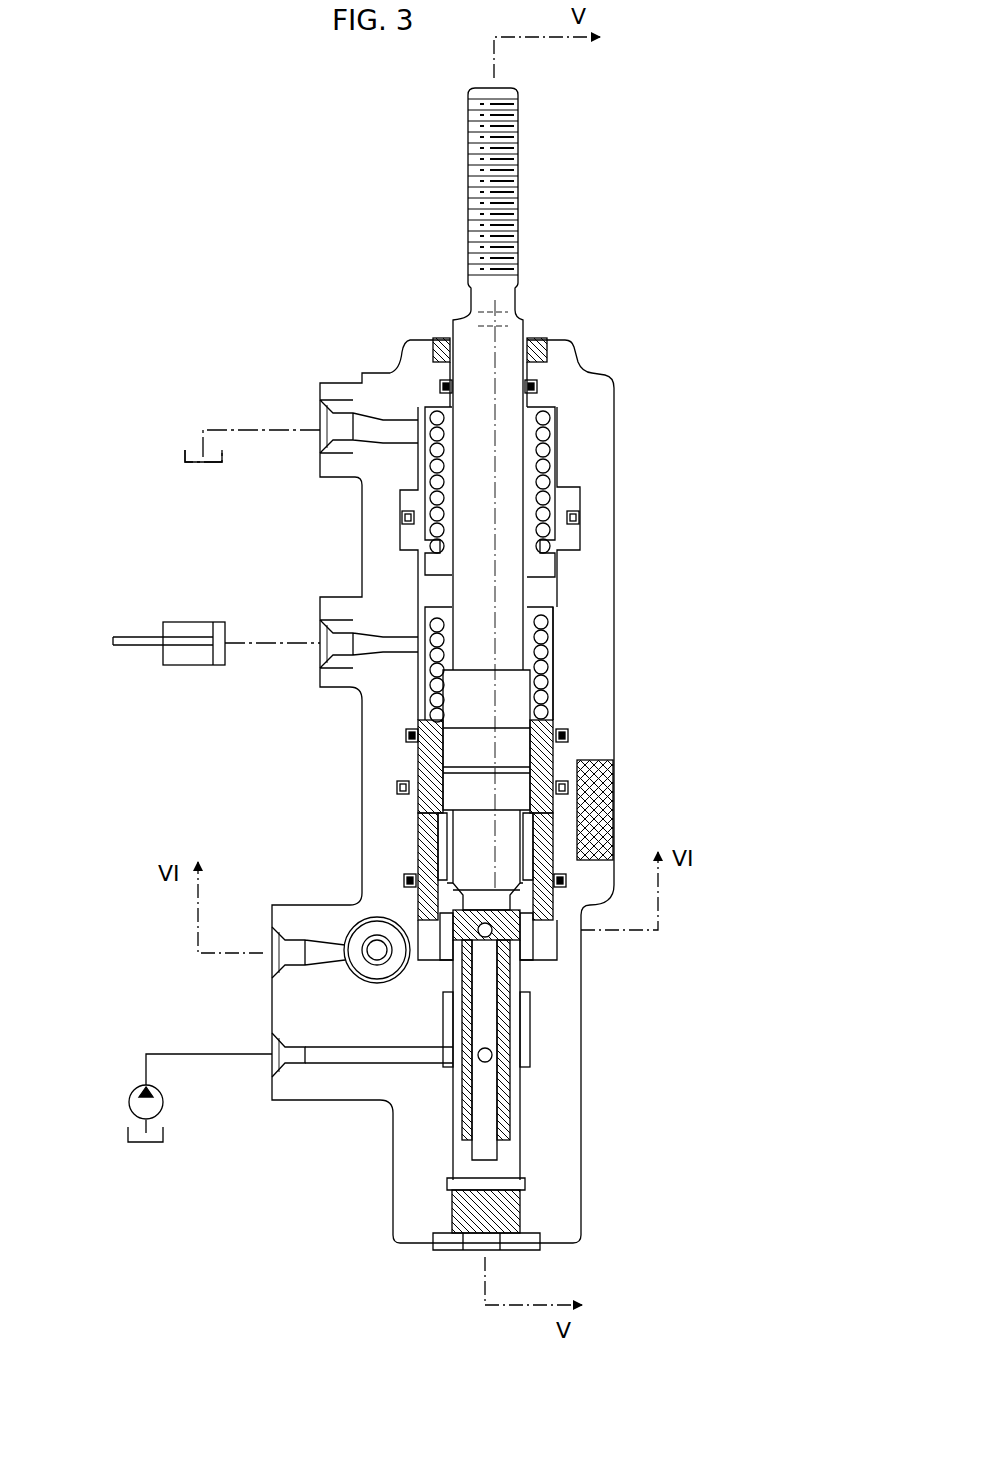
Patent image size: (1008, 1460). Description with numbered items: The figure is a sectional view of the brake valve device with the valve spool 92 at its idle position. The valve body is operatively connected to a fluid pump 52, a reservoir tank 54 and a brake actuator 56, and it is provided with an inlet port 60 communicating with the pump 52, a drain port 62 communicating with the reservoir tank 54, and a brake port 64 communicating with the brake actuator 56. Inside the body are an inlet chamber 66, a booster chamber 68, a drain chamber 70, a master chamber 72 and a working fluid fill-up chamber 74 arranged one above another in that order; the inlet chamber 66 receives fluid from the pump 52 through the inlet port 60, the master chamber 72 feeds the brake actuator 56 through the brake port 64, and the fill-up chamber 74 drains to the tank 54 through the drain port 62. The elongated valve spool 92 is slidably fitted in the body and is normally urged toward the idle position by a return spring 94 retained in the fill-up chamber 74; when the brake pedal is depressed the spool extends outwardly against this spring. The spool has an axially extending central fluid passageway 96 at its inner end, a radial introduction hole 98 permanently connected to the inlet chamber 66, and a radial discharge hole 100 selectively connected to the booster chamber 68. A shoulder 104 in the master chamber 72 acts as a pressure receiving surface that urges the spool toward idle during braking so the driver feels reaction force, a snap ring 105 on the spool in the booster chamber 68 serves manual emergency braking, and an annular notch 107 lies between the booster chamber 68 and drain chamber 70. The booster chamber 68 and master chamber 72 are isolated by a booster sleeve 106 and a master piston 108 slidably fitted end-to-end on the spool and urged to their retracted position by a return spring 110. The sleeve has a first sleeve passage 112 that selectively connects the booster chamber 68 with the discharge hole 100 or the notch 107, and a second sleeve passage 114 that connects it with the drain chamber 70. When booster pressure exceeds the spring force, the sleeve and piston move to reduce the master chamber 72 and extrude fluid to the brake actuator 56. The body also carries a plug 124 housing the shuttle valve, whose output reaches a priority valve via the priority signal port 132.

The fluid pump 52 is at (128, 1102).
The reservoir tank 54 is at (140, 1185).
The brake actuator 56 is at (188, 620).
The inlet port 60 is at (298, 1072).
The drain port 62 is at (350, 440).
The brake port 64 is at (345, 637).
The inlet chamber 66 is at (523, 1022).
The booster chamber 68 is at (530, 950).
The drain chamber 70 is at (613, 785).
The master chamber 72 is at (553, 665).
The working fluid fill-up chamber 74 is at (540, 460).
The valve spool 92 is at (513, 322).
The return spring 94 is at (553, 430).
The central fluid passageway 96 is at (490, 1105).
The introduction hole 98 is at (465, 1060).
The discharge hole 100 is at (590, 830).
The shoulder 104 is at (450, 690).
The snap ring 105 is at (553, 978).
The booster sleeve 106 is at (420, 868).
The annular notch 107 is at (420, 850).
The master piston 108 is at (430, 760).
The return spring 110 is at (553, 638).
The first sleeve passage 112 is at (415, 892).
The second sleeve passage 114 is at (413, 833).
The plug 124 is at (350, 983).
The priority signal port 132 is at (298, 958).